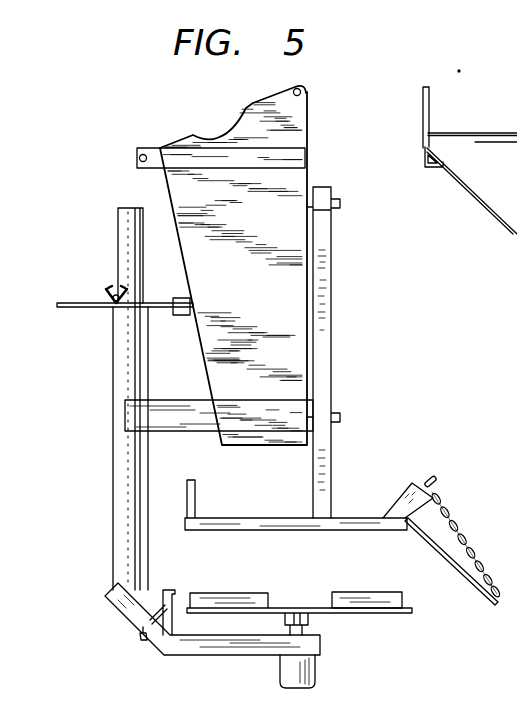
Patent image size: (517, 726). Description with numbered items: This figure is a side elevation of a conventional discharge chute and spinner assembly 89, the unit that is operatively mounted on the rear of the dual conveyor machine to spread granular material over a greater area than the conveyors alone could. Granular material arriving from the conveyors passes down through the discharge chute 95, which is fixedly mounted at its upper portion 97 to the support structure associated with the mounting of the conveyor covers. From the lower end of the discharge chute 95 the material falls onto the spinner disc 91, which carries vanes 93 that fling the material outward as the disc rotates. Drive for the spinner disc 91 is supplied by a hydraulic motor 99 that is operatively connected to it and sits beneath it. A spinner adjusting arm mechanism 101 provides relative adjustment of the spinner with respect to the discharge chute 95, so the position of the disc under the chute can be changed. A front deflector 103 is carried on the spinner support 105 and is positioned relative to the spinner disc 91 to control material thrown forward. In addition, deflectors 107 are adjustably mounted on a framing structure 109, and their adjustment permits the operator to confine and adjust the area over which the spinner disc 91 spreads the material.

The discharge chute and spinner assembly 89 is at (346, 303).
The spinner disc 91 is at (357, 614).
The vanes 93 is at (333, 604).
The discharge chute 95 is at (260, 300).
The upper portion 97 is at (268, 98).
The hydraulic motor 99 is at (285, 676).
The spinner adjusting arm mechanism 101 is at (94, 313).
The front deflector 103 is at (158, 592).
The spinner support 105 is at (163, 646).
The deflectors 107 is at (455, 572).
The framing structure 109 is at (348, 517).